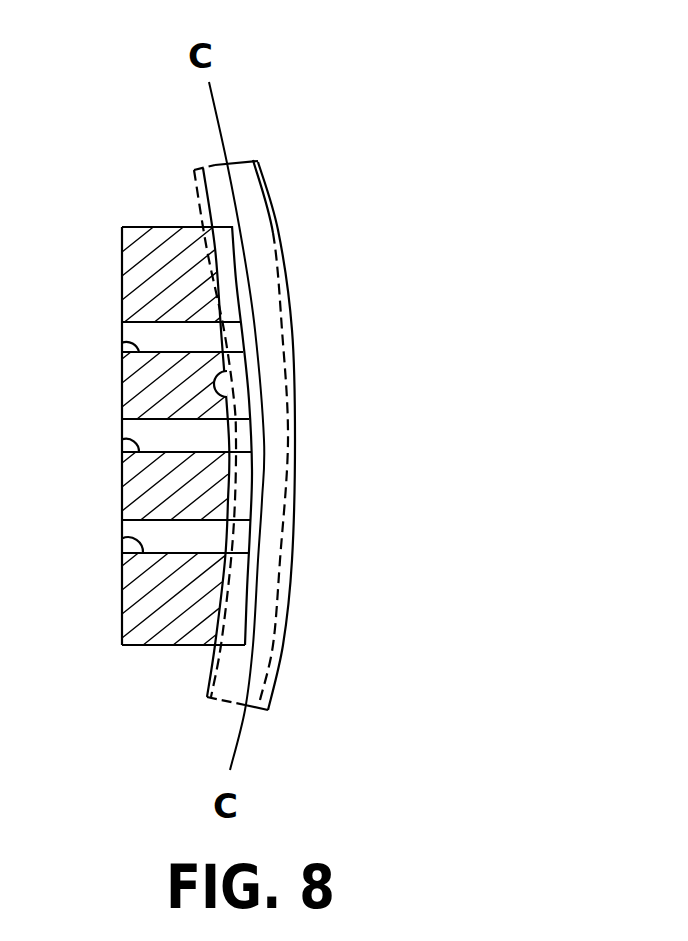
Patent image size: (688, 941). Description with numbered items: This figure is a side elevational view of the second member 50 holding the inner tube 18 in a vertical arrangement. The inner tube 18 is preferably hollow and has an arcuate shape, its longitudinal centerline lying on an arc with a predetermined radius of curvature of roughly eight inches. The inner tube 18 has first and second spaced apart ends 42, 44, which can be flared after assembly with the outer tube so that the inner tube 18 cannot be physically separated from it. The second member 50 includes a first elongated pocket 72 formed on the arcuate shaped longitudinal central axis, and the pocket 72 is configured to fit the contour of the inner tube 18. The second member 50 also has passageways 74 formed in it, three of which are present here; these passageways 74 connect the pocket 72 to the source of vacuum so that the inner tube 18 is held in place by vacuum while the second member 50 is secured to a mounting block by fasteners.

The inner tube 18 is at (296, 430).
The first end 42 is at (258, 160).
The second end 44 is at (257, 712).
The second member 50 is at (121, 301).
The first elongated pocket 72 is at (227, 371).
The passageways 74 is at (122, 342).